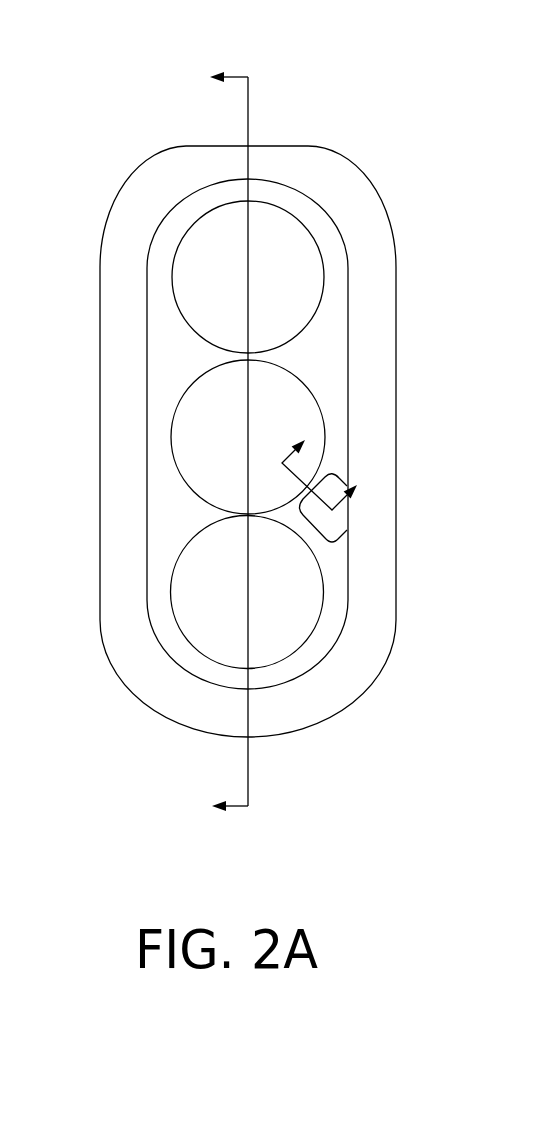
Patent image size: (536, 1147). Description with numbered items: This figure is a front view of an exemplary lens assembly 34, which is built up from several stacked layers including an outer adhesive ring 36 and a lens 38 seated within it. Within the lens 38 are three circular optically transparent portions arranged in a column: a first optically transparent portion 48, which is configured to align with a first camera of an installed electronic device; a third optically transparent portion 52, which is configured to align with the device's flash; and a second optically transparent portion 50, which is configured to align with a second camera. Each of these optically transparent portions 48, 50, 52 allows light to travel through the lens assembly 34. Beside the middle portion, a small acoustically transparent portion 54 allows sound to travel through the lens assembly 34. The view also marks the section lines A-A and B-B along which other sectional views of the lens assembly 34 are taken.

The lens assembly 34 is at (347, 88).
The adhesive ring 36 is at (142, 243).
The lens 38 is at (338, 393).
The first optically transparent portion 48 is at (313, 275).
The second optically transparent portion 50 is at (307, 615).
The third optically transparent portion 52 is at (185, 438).
The acoustically transparent portion 54 is at (338, 517).